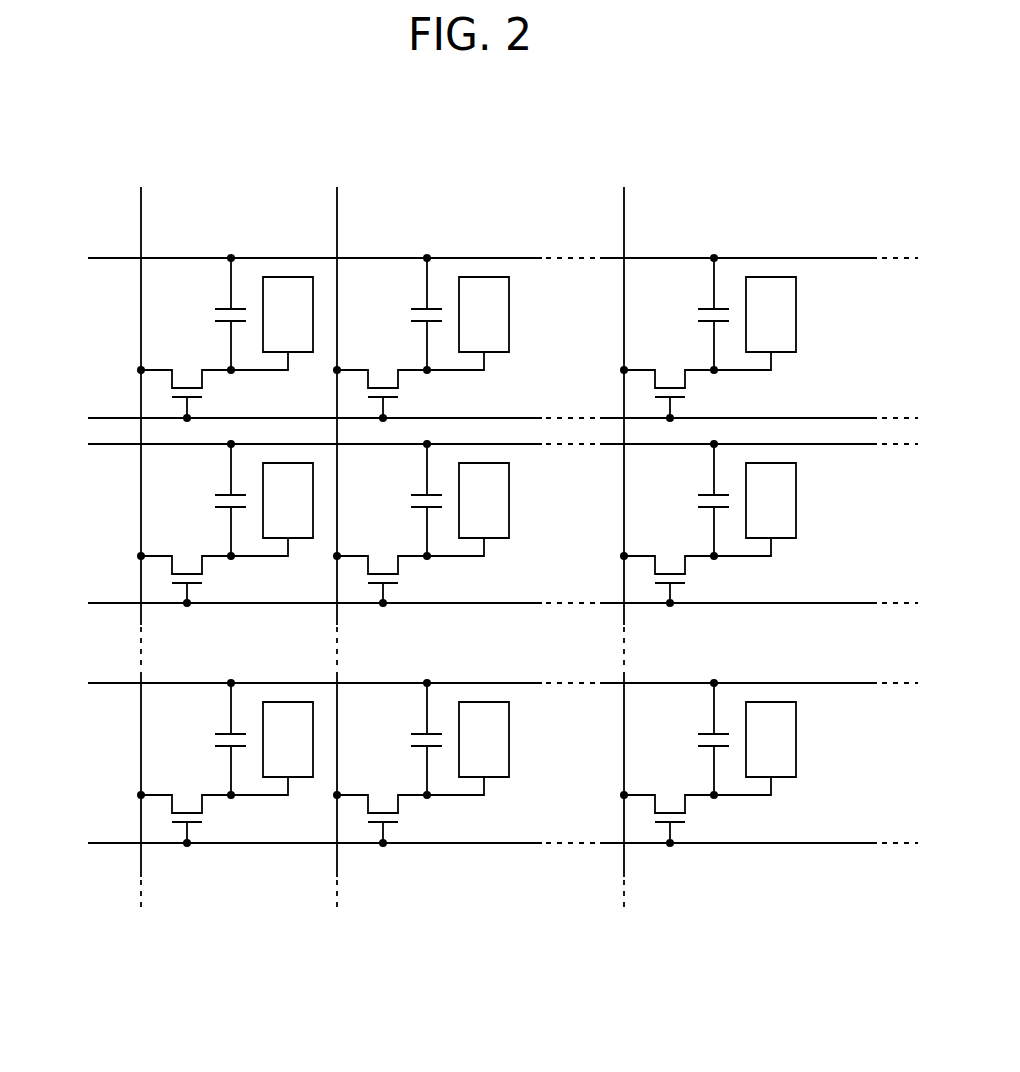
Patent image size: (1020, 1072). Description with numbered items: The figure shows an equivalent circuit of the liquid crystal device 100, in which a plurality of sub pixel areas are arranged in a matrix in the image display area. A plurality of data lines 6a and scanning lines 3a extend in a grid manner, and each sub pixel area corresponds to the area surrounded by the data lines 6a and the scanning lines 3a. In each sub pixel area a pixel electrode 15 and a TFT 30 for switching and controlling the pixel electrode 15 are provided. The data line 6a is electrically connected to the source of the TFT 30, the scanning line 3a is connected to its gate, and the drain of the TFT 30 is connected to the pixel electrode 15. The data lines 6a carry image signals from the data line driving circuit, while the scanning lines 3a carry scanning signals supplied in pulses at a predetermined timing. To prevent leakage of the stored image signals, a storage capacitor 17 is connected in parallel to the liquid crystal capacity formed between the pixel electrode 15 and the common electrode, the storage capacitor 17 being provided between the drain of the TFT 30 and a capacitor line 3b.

The liquid crystal device 100 is at (808, 151).
The data line 6a is at (141, 237).
The capacitor line 3b is at (100, 258).
The scanning line 3a is at (102, 418).
The pixel electrode 15 is at (288, 285).
The storage capacitor 17 is at (207, 307).
The TFT 30 is at (221, 399).